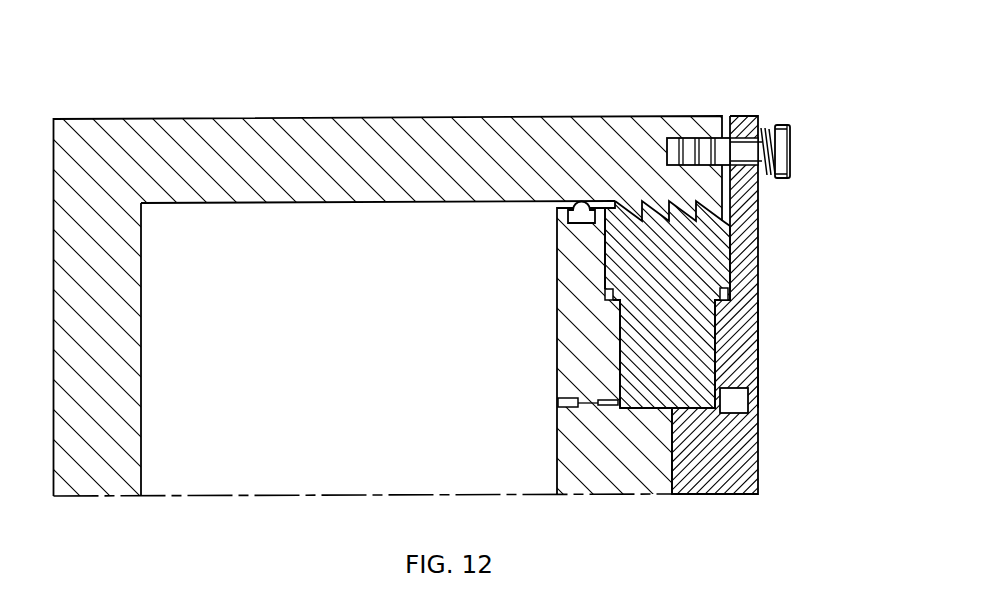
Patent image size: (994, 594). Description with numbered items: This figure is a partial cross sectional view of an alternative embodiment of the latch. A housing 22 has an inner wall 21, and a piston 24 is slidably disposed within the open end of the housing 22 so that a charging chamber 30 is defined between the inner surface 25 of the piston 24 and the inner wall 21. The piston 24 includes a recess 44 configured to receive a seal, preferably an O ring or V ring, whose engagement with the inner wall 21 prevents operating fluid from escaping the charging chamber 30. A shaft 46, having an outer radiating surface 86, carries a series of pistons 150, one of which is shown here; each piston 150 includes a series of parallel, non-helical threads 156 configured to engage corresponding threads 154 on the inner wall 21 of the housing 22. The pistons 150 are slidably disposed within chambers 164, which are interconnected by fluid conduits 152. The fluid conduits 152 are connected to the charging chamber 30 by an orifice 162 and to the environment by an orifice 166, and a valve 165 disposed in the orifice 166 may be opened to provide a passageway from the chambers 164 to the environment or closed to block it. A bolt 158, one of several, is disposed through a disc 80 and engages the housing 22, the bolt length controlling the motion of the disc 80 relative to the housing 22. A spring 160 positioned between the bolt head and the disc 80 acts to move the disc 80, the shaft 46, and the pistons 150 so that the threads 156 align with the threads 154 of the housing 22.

The housing 22 is at (331, 131).
The inner wall 21 is at (410, 206).
The charging chamber 30 is at (216, 310).
The recess 44 is at (557, 208).
The piston 24 is at (557, 287).
The chambers 164 is at (605, 293).
The inner surface 25 is at (557, 353).
The orifice 162 is at (557, 401).
The shaft 46 is at (628, 480).
The threads 154 is at (630, 207).
The threads 156 is at (715, 210).
The bolt 158 is at (710, 138).
The disc 80 is at (753, 120).
The spring 160 is at (762, 128).
The piston 150 is at (731, 240).
The outer radiating surface 86 is at (758, 318).
The valve 165 is at (742, 388).
The orifice 166 is at (752, 393).
The fluid conduits 152 is at (672, 480).